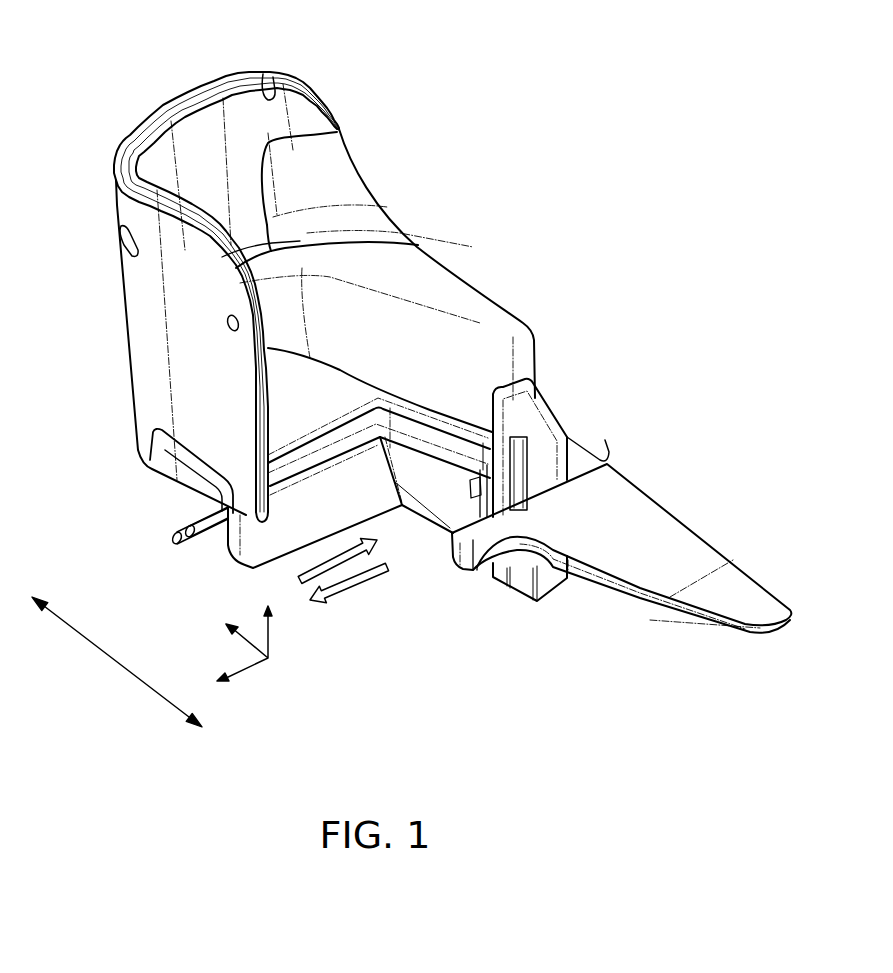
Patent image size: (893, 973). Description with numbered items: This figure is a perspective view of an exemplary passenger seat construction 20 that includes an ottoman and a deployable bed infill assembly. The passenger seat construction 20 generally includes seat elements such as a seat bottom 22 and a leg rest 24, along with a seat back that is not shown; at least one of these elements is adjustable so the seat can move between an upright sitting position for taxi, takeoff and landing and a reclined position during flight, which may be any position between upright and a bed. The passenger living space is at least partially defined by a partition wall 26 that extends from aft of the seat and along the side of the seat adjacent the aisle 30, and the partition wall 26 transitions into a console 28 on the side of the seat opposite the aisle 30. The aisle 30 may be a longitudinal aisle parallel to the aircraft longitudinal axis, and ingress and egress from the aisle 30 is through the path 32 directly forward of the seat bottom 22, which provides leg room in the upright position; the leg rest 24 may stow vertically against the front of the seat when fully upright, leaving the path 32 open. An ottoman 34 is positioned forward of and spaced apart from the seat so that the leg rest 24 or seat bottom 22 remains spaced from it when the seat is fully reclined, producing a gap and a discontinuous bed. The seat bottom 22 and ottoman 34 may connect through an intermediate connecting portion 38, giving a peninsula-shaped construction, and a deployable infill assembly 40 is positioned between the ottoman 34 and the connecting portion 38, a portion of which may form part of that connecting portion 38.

The passenger seat construction 20 is at (396, 121).
The seat bottom 22 is at (340, 392).
The leg rest 24 is at (340, 497).
The partition wall 26 is at (212, 80).
The console 28 is at (378, 257).
The aisle 30 is at (100, 652).
The path 32 is at (358, 596).
The ottoman 34 is at (653, 530).
The intermediate connecting portion 38 is at (470, 433).
The deployable infill assembly 40 is at (540, 428).